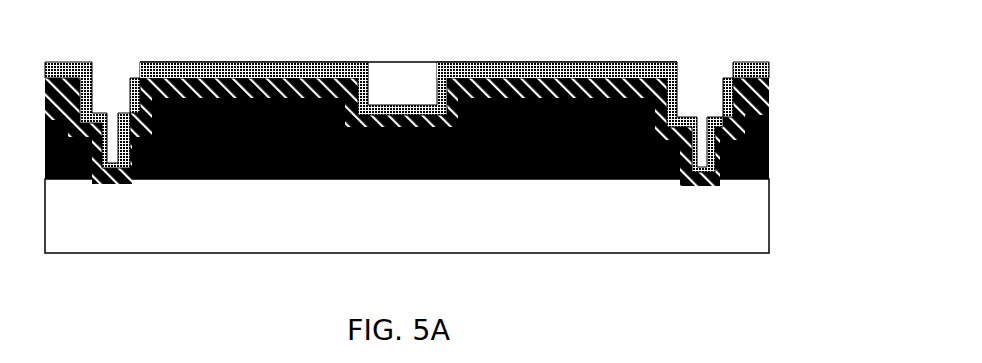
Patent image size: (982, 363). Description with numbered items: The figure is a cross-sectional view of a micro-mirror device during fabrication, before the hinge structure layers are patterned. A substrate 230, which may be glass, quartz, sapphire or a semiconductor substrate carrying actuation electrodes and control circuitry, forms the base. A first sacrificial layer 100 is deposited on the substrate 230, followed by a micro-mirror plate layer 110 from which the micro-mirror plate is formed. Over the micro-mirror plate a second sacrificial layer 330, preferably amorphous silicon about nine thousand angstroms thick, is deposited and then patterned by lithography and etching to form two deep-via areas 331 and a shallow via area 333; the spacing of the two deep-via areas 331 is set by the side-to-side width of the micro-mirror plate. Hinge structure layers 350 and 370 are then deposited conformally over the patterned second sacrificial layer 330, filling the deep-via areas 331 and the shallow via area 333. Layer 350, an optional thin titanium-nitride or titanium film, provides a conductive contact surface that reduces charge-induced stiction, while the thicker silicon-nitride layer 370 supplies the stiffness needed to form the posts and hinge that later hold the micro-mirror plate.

The first sacrificial layer 100 is at (442, 129).
The micro-mirror plate layer 110 is at (403, 173).
The substrate 230 is at (442, 216).
The second sacrificial layer 330 is at (442, 132).
The deep-via areas 331 is at (435, 97).
The shallow-via area 333 is at (428, 66).
The hinge structure layer 350 is at (442, 116).
The hinge structure layer 370 is at (424, 54).